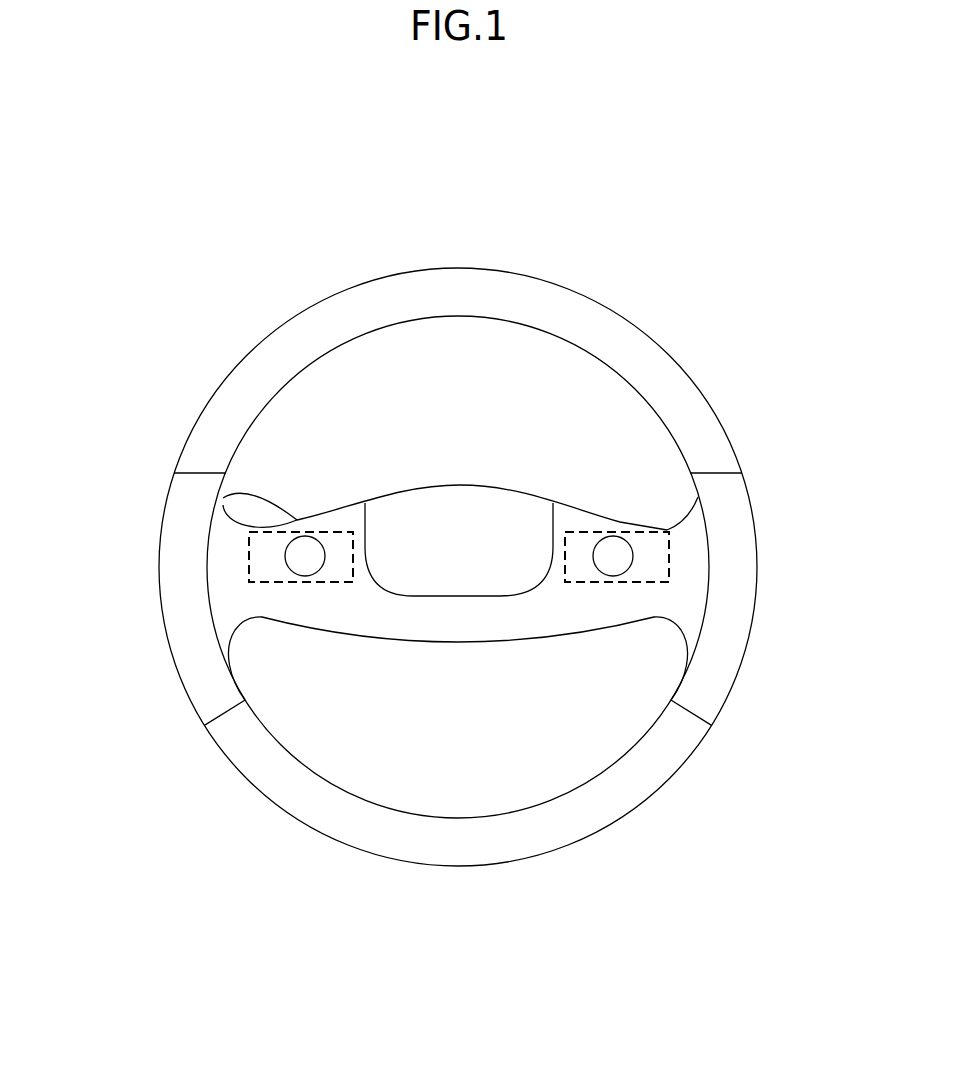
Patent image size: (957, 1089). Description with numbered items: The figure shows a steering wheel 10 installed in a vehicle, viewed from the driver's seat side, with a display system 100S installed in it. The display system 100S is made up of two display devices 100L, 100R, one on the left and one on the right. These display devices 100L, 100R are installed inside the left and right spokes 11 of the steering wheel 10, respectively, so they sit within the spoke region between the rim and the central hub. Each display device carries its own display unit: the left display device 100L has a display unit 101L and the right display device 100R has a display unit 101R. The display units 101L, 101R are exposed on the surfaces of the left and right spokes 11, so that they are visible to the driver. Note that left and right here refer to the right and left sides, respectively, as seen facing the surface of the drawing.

The steering wheel 10 is at (689, 337).
The spokes 11 is at (223, 498).
The display system 100S is at (459, 366).
The display device 100L is at (325, 517).
The display device 100R is at (591, 517).
The display unit 101L is at (285, 556).
The display unit 101R is at (633, 555).